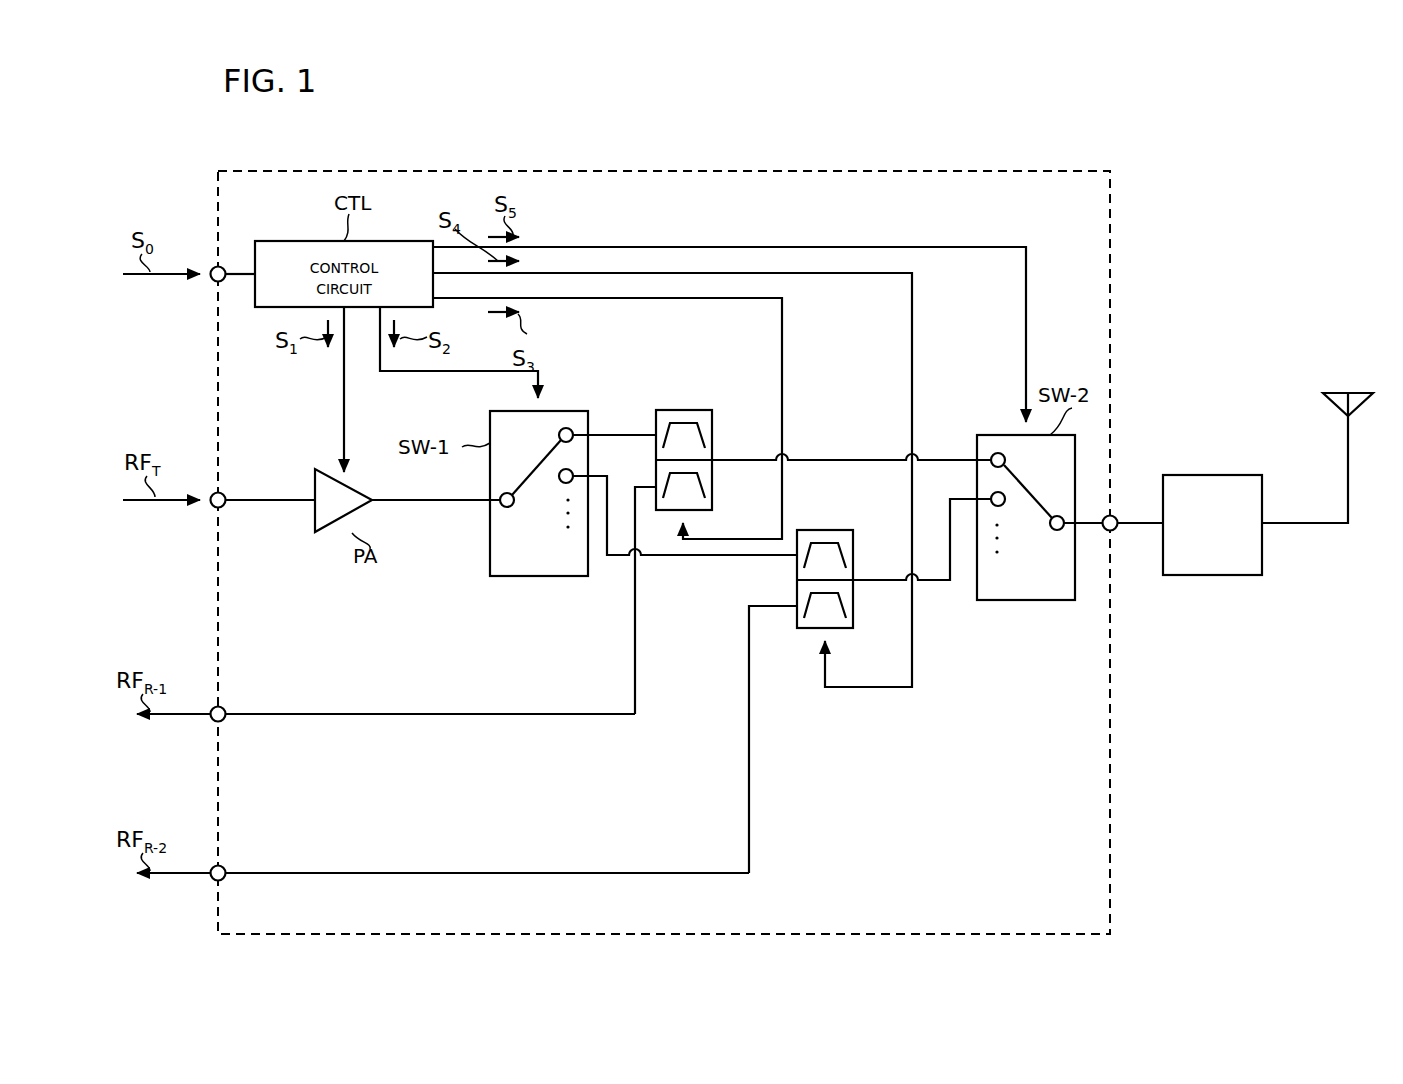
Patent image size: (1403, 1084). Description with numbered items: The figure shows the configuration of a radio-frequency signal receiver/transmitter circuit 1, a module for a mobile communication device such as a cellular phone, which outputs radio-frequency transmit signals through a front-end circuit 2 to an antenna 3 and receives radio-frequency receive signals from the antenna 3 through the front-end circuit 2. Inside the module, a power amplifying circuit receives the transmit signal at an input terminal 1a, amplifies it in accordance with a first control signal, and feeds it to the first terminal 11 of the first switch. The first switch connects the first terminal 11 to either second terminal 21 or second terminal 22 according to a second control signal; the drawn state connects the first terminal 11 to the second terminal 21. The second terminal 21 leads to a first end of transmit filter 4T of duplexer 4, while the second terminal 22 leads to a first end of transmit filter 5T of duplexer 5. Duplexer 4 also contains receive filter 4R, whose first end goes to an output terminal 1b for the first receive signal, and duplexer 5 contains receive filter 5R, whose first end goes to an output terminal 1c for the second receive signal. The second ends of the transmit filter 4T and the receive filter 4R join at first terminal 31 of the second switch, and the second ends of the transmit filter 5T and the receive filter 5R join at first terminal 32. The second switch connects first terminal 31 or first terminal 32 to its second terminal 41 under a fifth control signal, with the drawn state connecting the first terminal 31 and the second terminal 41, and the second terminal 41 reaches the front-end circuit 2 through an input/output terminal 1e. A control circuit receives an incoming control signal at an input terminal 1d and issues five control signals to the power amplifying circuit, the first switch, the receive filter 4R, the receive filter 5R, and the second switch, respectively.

The radio-frequency signal receiver/transmitter circuit 1 is at (1066, 171).
The input terminal 1a is at (212, 494).
The output terminal 1b is at (212, 708).
The output terminal 1c is at (212, 867).
The input terminal 1d is at (212, 268).
The input/output terminal 1e is at (1114, 531).
The front-end circuit 2 is at (1235, 475).
The antenna 3 is at (1360, 393).
The duplexer 4 is at (813, 532).
The transmit filter 4T is at (714, 435).
The receive filter 4R is at (714, 487).
The duplexer 5 is at (870, 671).
The transmit filter 5T is at (855, 555).
The receive filter 5R is at (855, 606).
The first terminal 11 is at (508, 508).
The second terminal 21 is at (558, 434).
The second terminal 22 is at (560, 483).
The first terminal 31 is at (1007, 458).
The first terminal 32 is at (1003, 506).
The second terminal 41 is at (1057, 531).